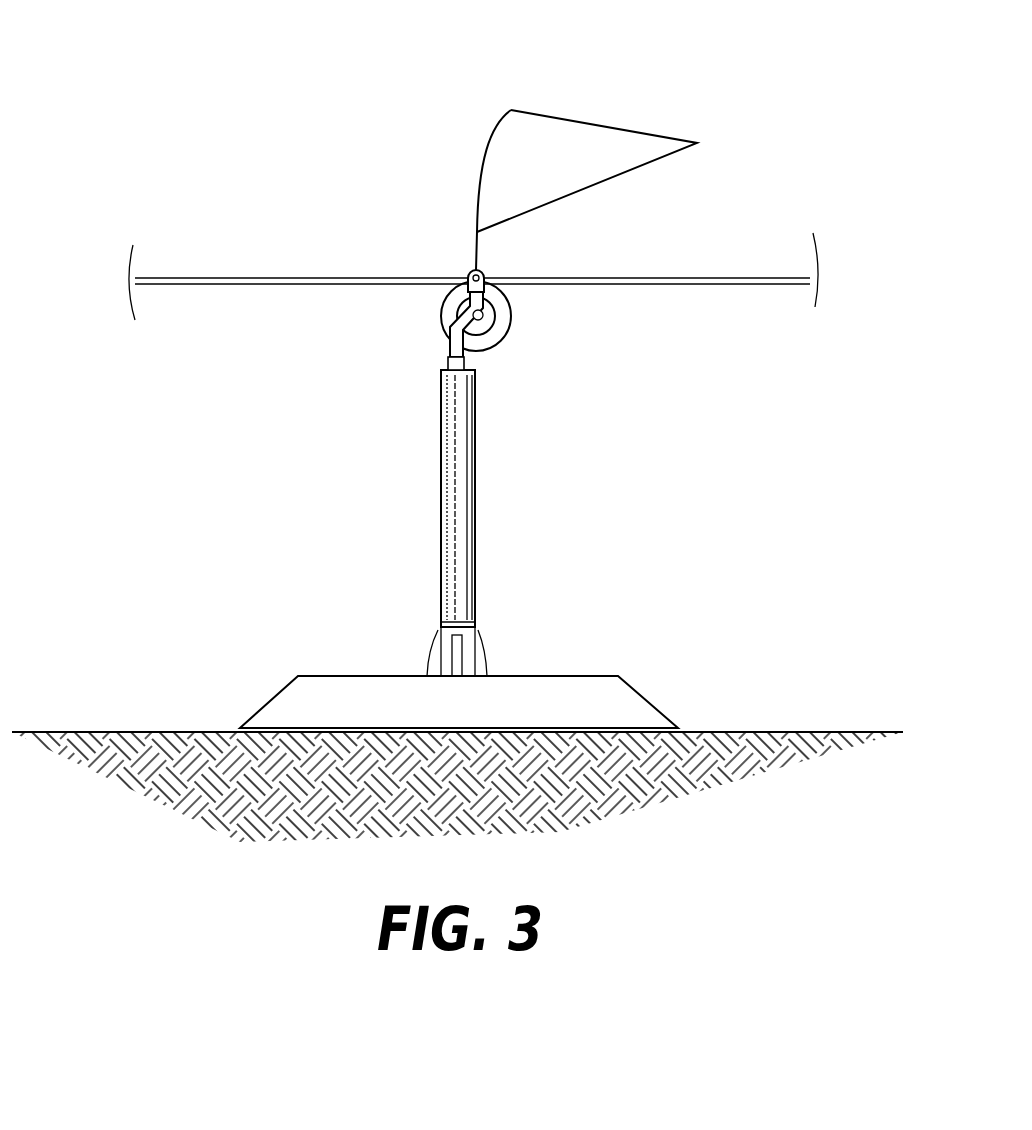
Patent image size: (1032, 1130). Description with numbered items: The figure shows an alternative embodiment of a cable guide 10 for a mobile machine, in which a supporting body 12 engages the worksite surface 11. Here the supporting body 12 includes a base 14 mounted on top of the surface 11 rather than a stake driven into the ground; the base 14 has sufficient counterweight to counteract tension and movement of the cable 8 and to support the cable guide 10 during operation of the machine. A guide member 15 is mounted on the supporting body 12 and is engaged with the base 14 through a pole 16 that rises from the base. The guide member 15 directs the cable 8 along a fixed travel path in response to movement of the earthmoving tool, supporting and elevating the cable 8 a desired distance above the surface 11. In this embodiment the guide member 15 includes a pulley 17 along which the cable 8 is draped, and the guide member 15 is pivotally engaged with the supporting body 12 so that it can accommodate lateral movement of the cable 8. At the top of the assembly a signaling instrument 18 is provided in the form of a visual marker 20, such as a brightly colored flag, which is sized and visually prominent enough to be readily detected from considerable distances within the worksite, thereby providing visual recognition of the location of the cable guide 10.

The cable 8 is at (263, 278).
The cable guide 10 is at (473, 379).
The worksite surface 11 is at (125, 732).
The supporting body 12 is at (462, 549).
The base 14 is at (627, 702).
The guide member 15 is at (436, 320).
The pole 16 is at (450, 483).
The pulley 17 is at (512, 312).
The signaling instrument 18 is at (433, 180).
The visual marker 20 is at (575, 143).